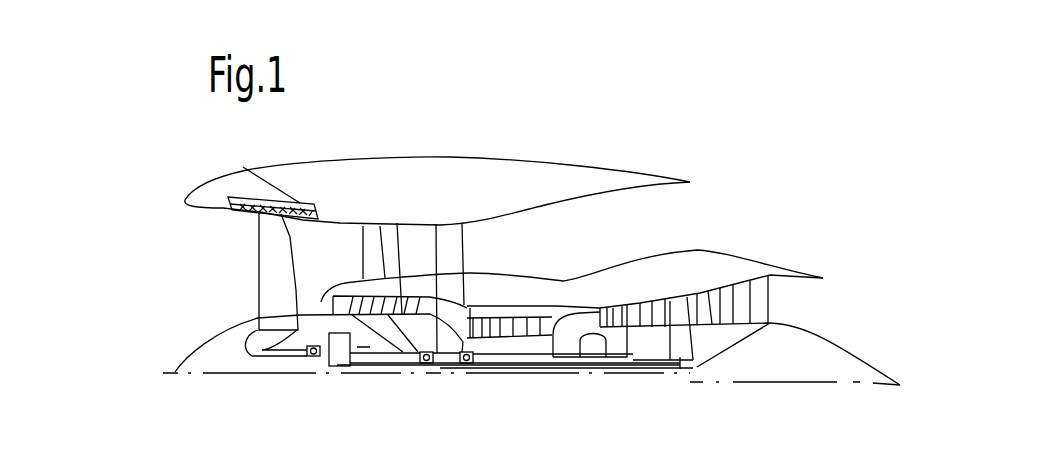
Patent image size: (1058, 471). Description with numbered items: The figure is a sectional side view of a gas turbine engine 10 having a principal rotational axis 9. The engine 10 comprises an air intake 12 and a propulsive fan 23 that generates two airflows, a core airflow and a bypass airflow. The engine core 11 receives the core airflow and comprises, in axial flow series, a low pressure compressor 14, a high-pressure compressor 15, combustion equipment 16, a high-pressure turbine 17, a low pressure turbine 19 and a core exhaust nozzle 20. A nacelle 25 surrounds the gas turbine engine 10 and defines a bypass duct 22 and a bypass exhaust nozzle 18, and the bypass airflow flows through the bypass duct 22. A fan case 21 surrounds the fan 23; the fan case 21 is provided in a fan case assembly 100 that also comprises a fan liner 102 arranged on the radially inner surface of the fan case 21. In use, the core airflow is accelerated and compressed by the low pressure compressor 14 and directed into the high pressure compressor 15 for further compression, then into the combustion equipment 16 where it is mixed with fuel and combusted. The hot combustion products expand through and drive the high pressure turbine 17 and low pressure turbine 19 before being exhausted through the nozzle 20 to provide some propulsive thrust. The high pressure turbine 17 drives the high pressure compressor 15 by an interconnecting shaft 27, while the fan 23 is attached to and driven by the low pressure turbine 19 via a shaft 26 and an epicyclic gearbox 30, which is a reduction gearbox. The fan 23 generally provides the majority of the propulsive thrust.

The fan case assembly 100 is at (338, 148).
The fan liner 102 is at (212, 184).
The gas turbine engine 10 is at (243, 167).
The air intake 12 is at (200, 244).
The fan case 21 is at (305, 202).
The nacelle 25 is at (500, 173).
The low pressure compressor 14 is at (399, 226).
The propulsive fan 23 is at (258, 273).
The high-pressure compressor 15 is at (511, 295).
The engine core 11 is at (566, 295).
The bypass duct 22 is at (669, 226).
The bypass exhaust nozzle 18 is at (736, 214).
The low pressure turbine 19 is at (744, 292).
The high-pressure turbine 17 is at (634, 306).
The core exhaust nozzle 20 is at (802, 308).
The epicyclic gearbox 30 is at (341, 350).
The shaft 26 is at (513, 367).
The interconnecting shaft 27 is at (540, 370).
The combustion equipment 16 is at (587, 330).
The principal rotational axis 9 is at (733, 382).